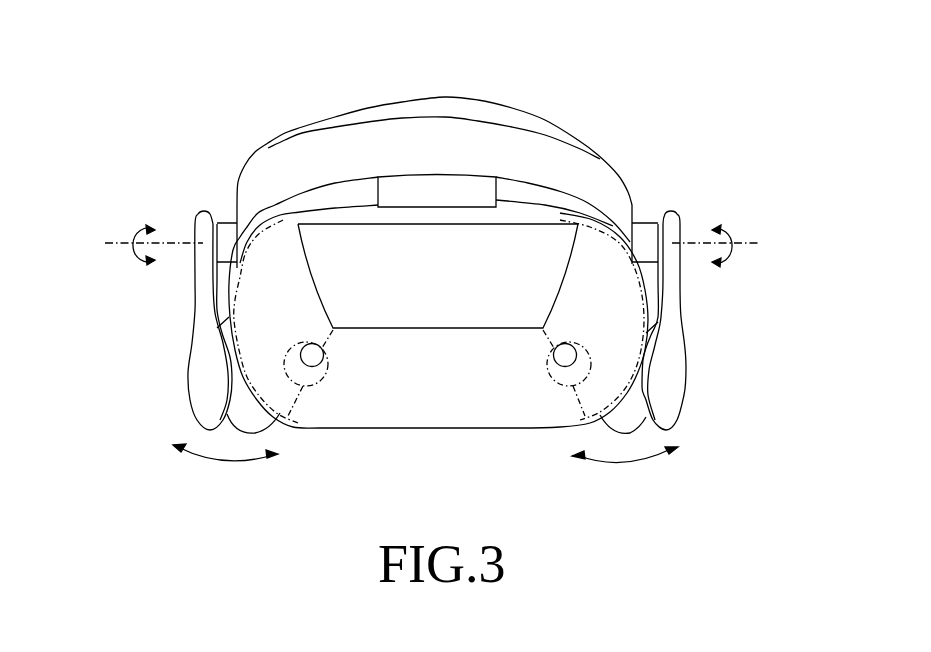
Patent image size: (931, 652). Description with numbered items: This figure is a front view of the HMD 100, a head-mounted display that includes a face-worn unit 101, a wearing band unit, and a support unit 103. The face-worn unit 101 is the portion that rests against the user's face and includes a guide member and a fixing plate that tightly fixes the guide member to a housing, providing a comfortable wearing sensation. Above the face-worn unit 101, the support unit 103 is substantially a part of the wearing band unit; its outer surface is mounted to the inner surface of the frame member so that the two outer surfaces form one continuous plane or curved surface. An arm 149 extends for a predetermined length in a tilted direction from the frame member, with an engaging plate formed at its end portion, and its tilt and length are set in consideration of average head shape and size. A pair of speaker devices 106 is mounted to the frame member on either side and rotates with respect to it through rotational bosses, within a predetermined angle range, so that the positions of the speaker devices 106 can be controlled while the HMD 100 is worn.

The HMD 100 is at (435, 279).
The face-worn unit 101 is at (513, 425).
The support unit 103 is at (541, 140).
The speaker devices 106 is at (202, 406).
The arm 149 is at (465, 195).